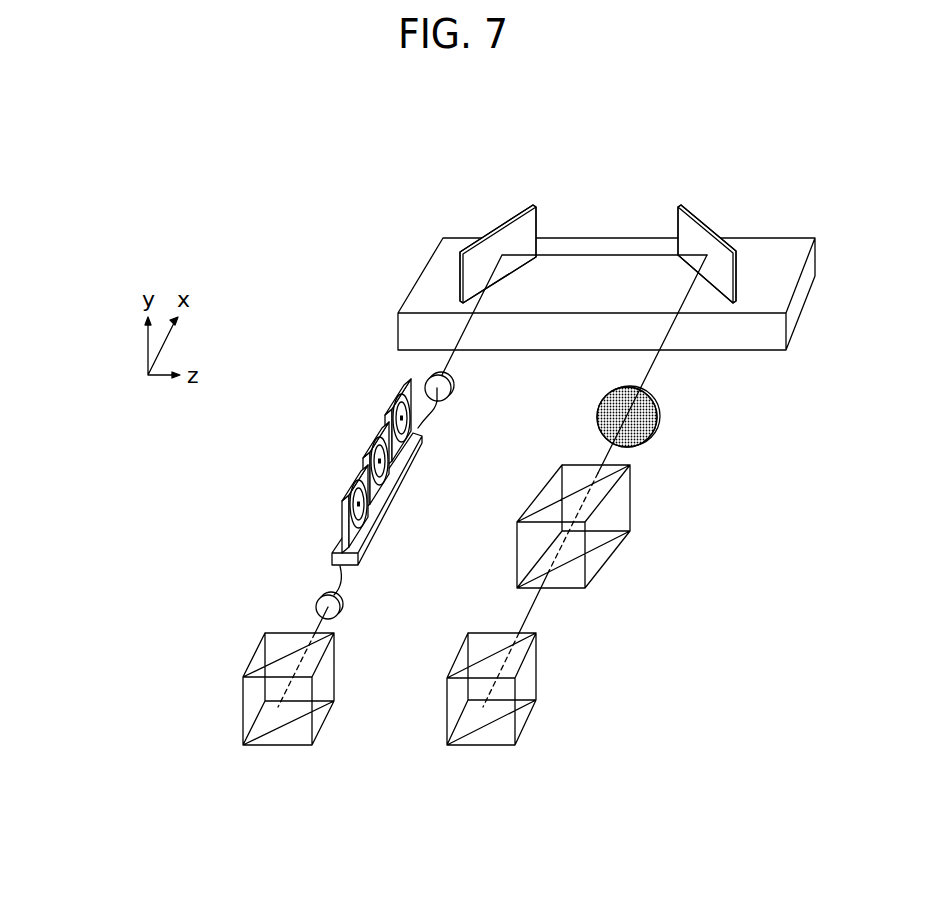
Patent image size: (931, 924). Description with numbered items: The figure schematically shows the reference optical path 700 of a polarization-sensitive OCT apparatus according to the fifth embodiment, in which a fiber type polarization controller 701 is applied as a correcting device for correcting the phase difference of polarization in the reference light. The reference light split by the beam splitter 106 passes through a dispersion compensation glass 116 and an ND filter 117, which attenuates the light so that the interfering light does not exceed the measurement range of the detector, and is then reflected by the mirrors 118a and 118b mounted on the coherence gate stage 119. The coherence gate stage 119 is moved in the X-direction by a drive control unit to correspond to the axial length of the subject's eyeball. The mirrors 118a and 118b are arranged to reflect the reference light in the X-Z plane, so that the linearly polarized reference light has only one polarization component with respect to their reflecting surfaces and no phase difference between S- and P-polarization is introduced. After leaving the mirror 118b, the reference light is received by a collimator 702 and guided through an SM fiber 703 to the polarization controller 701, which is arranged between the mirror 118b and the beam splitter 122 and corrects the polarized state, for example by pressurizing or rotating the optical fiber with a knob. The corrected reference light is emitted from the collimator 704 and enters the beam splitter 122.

The optical system 700 is at (103, 245).
The coherence gate stage 119 is at (410, 332).
The mirror 118a is at (695, 230).
The mirror 118b is at (528, 231).
The ND filter 117 is at (647, 433).
The dispersion compensation glass 116 is at (597, 555).
The beam splitter 106 is at (530, 670).
The collimator 702 is at (452, 393).
The SM fiber 703 is at (418, 426).
The fiber type polarization controller 701 is at (342, 495).
The collimator 704 is at (342, 609).
The beam splitter 122 is at (264, 637).